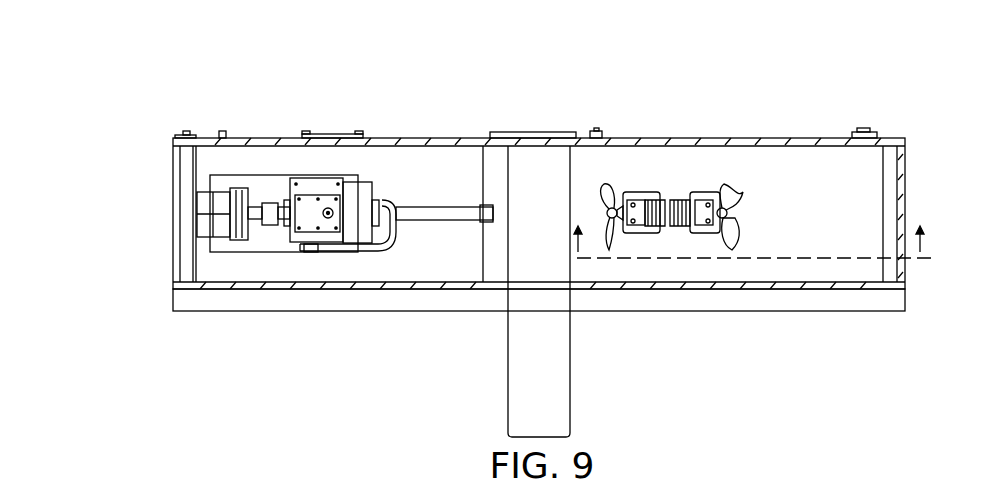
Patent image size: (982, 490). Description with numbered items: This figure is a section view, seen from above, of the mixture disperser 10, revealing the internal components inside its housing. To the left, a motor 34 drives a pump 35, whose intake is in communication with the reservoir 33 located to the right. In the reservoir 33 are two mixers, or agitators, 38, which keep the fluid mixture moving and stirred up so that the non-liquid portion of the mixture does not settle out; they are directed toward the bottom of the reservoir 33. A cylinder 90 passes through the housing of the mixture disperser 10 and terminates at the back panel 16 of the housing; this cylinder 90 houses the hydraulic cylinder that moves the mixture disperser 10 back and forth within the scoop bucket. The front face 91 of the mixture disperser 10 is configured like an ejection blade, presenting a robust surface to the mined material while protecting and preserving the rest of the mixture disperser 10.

The mixture disperser 10 is at (893, 129).
The back panel 16 is at (733, 138).
The reservoir 33 is at (862, 192).
The motor 34 is at (231, 201).
The pump 35 is at (345, 212).
The mixers 38 is at (700, 226).
The cylinder 90 is at (515, 387).
The front face 91 is at (742, 302).